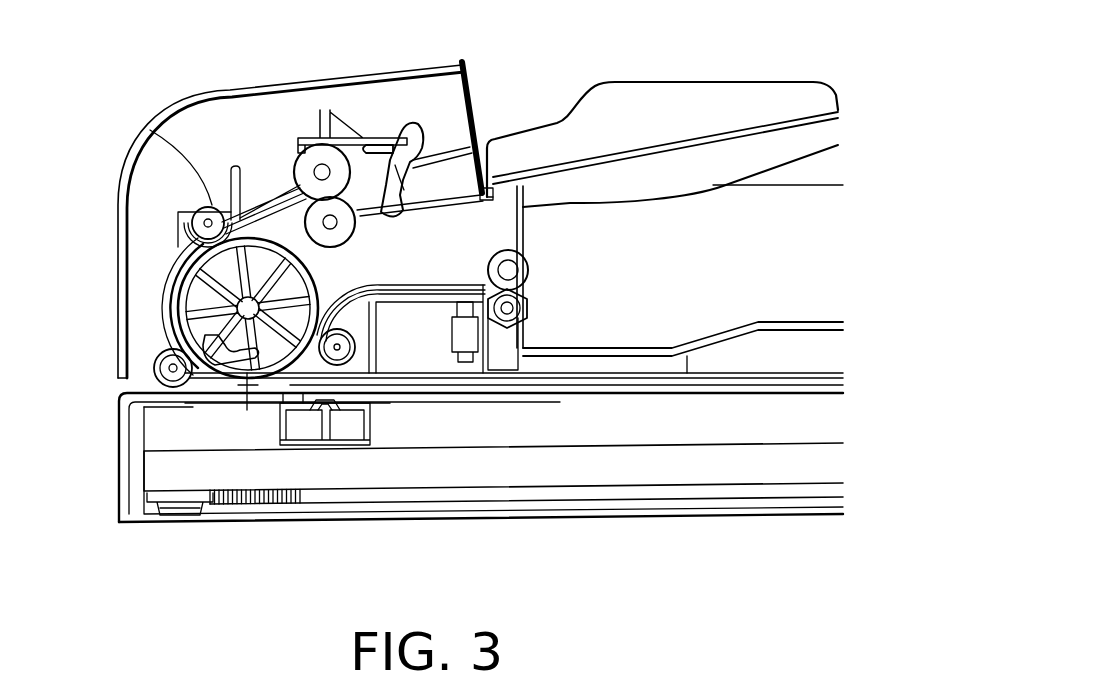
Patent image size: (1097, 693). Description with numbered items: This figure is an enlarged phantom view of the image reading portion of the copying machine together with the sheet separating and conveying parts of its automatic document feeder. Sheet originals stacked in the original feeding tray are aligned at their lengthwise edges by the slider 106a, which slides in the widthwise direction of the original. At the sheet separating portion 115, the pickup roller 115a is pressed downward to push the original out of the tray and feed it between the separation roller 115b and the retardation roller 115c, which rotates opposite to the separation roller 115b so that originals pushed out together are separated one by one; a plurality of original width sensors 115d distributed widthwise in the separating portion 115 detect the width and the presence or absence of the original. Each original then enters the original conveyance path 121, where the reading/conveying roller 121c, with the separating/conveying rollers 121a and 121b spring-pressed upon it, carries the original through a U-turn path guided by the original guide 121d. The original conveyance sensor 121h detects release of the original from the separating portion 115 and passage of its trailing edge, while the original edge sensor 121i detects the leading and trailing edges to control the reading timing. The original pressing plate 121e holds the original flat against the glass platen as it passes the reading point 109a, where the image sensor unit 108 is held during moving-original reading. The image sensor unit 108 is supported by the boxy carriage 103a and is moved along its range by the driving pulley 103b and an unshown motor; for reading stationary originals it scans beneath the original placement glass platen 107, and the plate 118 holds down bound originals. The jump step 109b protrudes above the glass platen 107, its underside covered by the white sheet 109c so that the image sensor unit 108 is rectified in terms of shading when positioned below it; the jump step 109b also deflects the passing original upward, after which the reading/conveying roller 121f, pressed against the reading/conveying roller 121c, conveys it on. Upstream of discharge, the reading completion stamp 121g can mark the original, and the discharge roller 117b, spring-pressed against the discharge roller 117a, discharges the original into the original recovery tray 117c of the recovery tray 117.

The original conveyance path 121 is at (175, 272).
The separating/conveying roller 121a is at (176, 228).
The separating/conveying roller 121b is at (160, 357).
The reading/conveying roller 121c is at (168, 230).
The original guide 121d is at (147, 300).
The original pressing plate 121e is at (210, 393).
The reading/conveying roller 121f is at (345, 372).
The reading completion stamp 121g is at (477, 355).
The original conveyance sensor 121h is at (232, 205).
The original edge sensor 121i is at (160, 318).
The sheet separating portion 115 is at (148, 182).
The pickup roller 115a is at (370, 143).
The separation roller 115b is at (313, 150).
The retardation roller 115c is at (320, 213).
The original width sensors 115d is at (412, 123).
The slider 106a is at (543, 147).
The original recovery tray 117 is at (613, 333).
The discharge roller 117a is at (530, 313).
The discharge roller 117b is at (530, 263).
The original recovery tray 117c is at (645, 348).
The original placement glass platen 107 is at (607, 390).
The plate for holding down bound originals 118 is at (728, 383).
The reading point 109a is at (273, 397).
The jump step 109b is at (290, 425).
The white sheet 109c is at (300, 420).
The boxy carriage 103a is at (557, 468).
The driving pulley 103b is at (152, 515).
The image sensor unit 108 is at (293, 448).